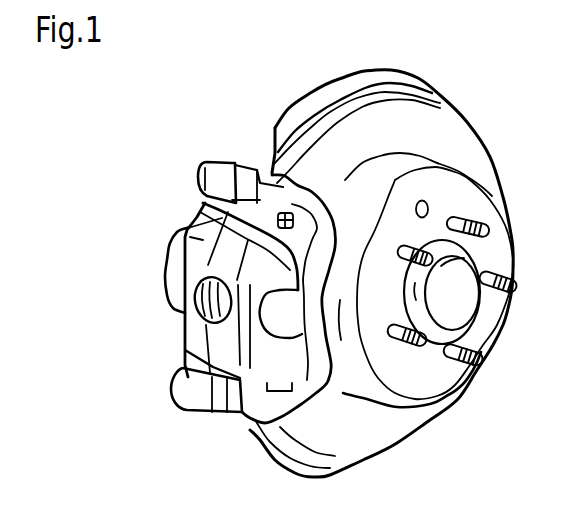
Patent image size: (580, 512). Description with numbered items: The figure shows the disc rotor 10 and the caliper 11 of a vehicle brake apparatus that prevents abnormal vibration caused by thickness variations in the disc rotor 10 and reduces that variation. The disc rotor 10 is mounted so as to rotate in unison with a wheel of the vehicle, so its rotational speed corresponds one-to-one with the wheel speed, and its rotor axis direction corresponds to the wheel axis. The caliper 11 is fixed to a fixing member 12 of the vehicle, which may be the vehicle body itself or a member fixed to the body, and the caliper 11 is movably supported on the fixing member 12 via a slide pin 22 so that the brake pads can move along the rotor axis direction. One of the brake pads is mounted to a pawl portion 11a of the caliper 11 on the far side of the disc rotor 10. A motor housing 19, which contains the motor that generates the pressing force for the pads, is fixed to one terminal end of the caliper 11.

The disc rotor 10 is at (436, 113).
The caliper 11 is at (216, 350).
The pawl portion 11a is at (200, 212).
The fixing member 12 is at (282, 195).
The motor housing 19 is at (166, 283).
The slide pin 22 is at (199, 163).